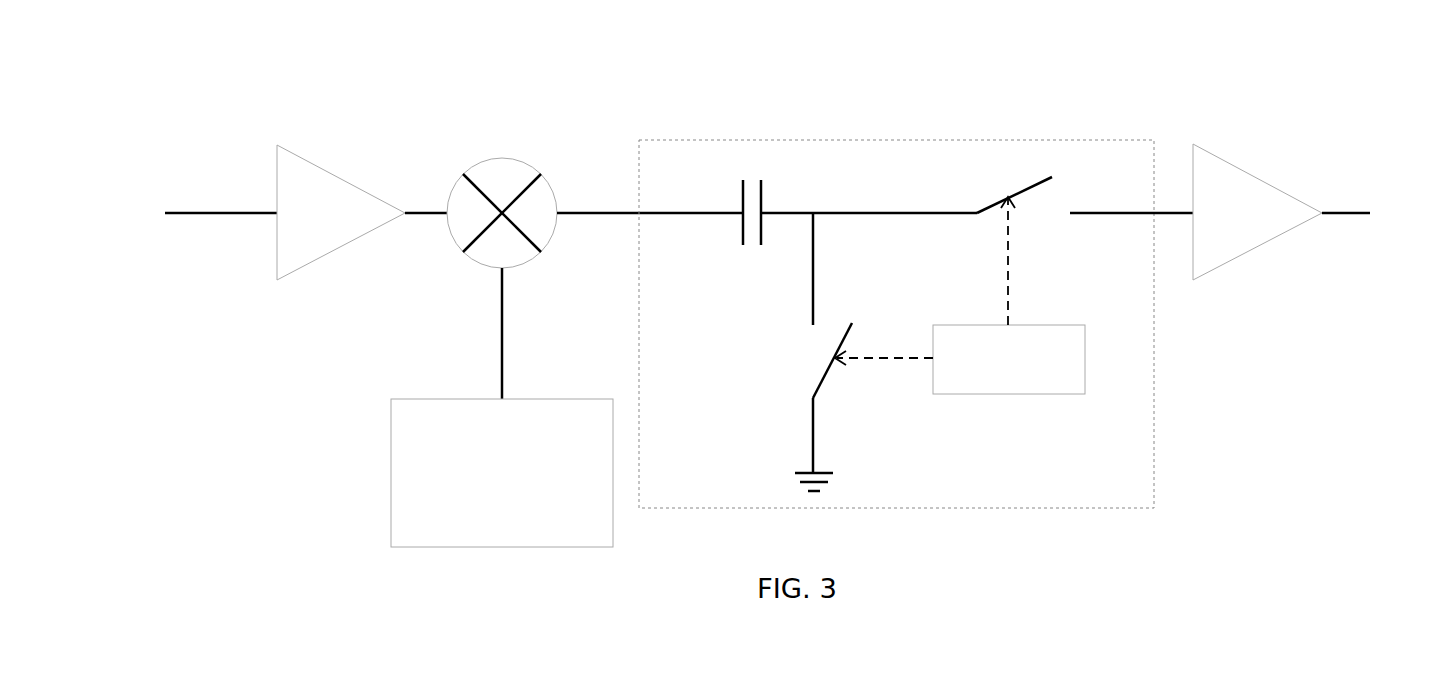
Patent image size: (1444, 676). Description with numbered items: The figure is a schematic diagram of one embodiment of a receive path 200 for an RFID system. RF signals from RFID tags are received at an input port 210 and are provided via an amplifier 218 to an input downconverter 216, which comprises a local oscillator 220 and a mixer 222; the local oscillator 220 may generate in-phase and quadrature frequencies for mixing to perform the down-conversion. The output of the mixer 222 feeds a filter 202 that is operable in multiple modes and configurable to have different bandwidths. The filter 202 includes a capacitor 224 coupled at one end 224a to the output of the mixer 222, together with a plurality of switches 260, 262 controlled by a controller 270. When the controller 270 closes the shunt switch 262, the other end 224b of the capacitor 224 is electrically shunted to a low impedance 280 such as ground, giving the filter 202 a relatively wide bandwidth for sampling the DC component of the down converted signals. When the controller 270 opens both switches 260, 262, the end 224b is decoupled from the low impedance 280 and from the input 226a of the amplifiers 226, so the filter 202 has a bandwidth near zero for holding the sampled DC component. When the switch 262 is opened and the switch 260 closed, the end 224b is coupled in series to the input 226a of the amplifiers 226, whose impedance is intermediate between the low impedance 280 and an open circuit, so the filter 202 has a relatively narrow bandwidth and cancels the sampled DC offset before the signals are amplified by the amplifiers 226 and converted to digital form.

The receive path 200 is at (173, 117).
The input downconverter 216 is at (560, 88).
The filter 202 is at (800, 140).
The amplifier 218 is at (323, 177).
The input port 210 is at (260, 213).
The mixer 222 is at (502, 163).
The local oscillator 220 is at (545, 402).
The capacitor 224 is at (761, 190).
The one end of the capacitor 224a is at (715, 213).
The other end of the capacitor 224b is at (800, 213).
The switch 260 is at (993, 200).
The shunt switch 262 is at (852, 332).
The controller 270 is at (1067, 327).
The low impedance 280 is at (832, 480).
The amplifiers 226 is at (1260, 180).
The input of the amplifiers 226a is at (1138, 213).